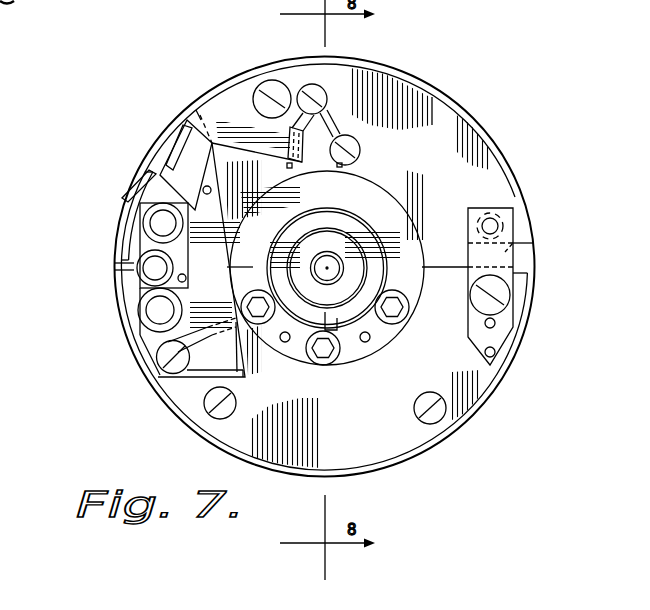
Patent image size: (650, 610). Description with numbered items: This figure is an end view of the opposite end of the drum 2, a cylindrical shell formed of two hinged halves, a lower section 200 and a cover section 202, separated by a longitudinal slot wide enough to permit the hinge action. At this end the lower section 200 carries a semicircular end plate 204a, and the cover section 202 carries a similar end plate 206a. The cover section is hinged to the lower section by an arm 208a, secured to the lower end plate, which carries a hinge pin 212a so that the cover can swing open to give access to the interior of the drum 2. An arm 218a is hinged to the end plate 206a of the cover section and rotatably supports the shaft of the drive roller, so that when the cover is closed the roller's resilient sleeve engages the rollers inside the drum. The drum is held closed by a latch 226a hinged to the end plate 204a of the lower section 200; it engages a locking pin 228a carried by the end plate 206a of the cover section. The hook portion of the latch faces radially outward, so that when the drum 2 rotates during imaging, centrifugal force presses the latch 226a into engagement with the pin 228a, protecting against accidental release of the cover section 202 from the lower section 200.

The drum 2 is at (488, 120).
The lower section 200 is at (435, 448).
The cover section 202 is at (391, 66).
The end plate 204a is at (230, 428).
The end plate 206a is at (432, 113).
The arm 208a is at (507, 280).
The hinge pin 212a is at (500, 226).
The arm 218a is at (245, 107).
The latch 226a is at (197, 205).
The locking pin 228a is at (160, 225).